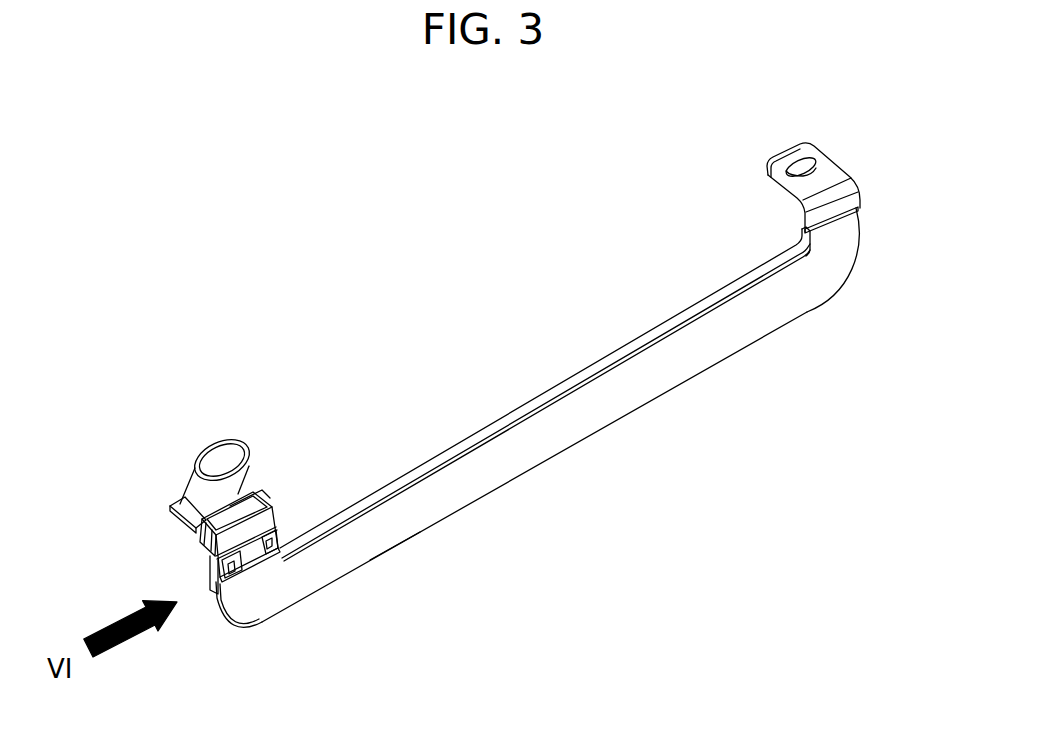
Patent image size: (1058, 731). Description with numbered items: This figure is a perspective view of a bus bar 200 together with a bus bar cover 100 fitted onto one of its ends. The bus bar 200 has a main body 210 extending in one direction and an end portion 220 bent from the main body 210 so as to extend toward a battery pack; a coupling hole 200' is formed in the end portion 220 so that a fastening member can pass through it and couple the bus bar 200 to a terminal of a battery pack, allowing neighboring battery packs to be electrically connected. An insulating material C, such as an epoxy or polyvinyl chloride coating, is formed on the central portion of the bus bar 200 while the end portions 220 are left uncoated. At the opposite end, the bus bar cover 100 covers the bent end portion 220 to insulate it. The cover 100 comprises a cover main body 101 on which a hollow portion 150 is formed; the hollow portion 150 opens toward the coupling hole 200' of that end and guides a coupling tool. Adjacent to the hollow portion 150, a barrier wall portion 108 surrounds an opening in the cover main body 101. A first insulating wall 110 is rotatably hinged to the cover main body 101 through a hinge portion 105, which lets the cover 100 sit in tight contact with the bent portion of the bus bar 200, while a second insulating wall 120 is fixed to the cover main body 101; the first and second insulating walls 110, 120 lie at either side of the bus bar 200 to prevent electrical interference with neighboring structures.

The bus bar cover 100 is at (238, 430).
The cover main body 101 is at (170, 509).
The hinge portion 105 is at (273, 523).
The barrier wall portion 108 is at (267, 490).
The first insulating wall 110 is at (247, 573).
The second insulating wall 120 is at (203, 578).
The hollow portion 150 is at (203, 452).
The bus bar 200 is at (537, 417).
The coupling hole 200' is at (785, 140).
The main body 210 is at (523, 400).
The end portion 220 is at (826, 162).
The insulating material C is at (388, 534).